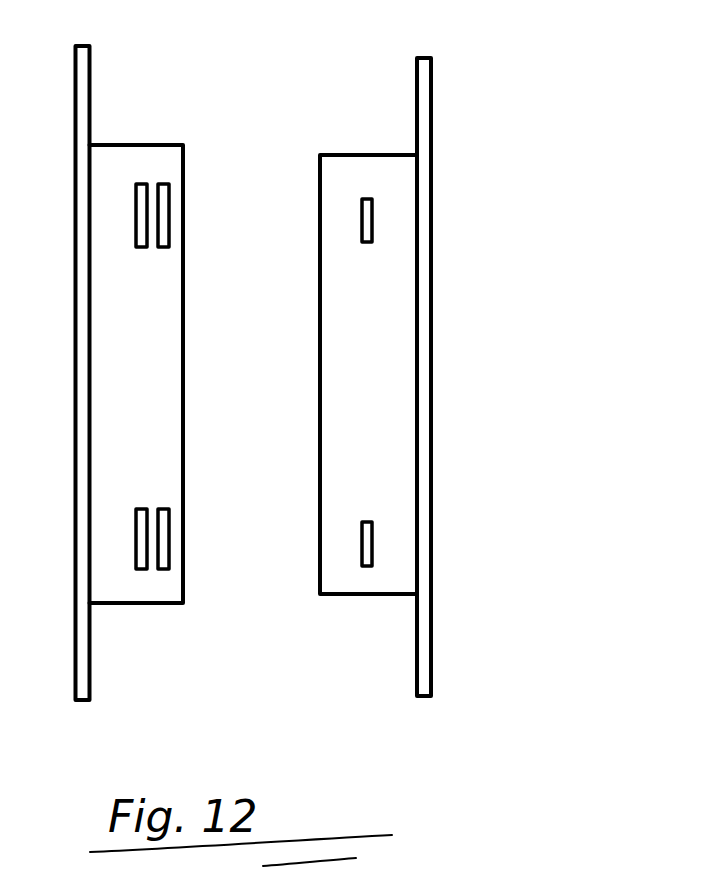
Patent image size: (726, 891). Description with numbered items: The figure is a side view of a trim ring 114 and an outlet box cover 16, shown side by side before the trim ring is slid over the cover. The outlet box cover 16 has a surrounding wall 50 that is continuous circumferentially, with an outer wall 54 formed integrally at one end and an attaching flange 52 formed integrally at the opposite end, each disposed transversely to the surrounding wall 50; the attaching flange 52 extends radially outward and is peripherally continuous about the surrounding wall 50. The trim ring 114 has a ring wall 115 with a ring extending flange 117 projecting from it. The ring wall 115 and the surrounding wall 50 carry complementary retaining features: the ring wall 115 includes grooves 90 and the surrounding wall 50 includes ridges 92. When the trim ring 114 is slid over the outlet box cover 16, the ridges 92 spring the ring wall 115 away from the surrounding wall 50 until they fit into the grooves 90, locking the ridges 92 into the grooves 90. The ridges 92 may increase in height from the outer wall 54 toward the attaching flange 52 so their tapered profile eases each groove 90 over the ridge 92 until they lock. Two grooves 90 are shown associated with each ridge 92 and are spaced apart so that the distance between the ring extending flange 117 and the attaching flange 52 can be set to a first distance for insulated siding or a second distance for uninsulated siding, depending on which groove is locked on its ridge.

The outlet box cover 16 is at (462, 88).
The surrounding wall 50 is at (378, 368).
The attaching flange 52 is at (420, 657).
The outer wall 54 is at (318, 548).
The grooves 90 is at (170, 212).
The ridges 92 is at (373, 231).
The trim ring 114 is at (172, 97).
The ring wall 115 is at (143, 383).
The ring extending flange 117 is at (89, 669).